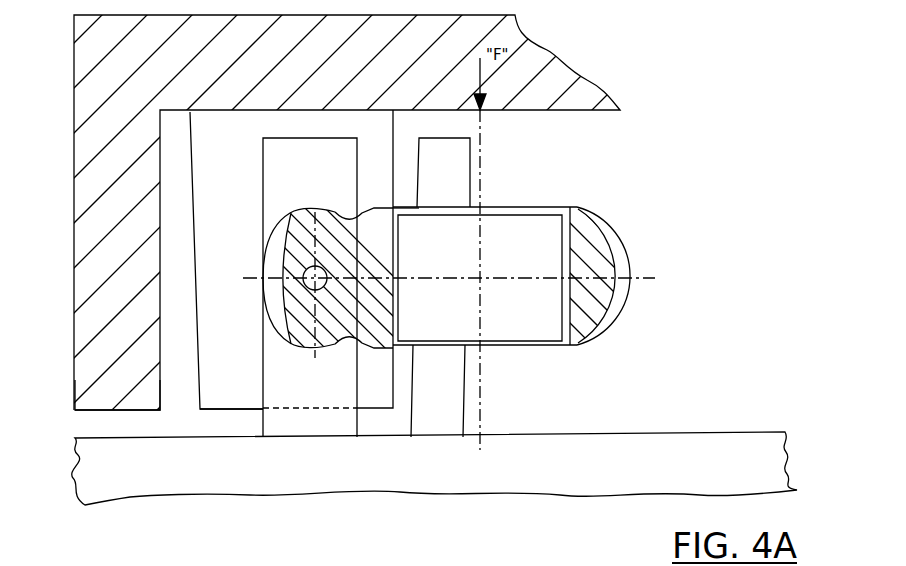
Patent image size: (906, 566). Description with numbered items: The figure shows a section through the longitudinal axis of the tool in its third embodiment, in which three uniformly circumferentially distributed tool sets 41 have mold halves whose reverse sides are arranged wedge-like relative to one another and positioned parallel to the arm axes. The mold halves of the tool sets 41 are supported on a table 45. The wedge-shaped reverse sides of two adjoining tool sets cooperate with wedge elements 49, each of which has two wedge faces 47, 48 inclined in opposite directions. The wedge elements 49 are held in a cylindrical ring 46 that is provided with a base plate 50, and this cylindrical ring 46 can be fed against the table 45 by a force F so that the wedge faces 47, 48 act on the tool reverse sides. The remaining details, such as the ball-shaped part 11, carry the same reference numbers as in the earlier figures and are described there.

The ball stud 11 is at (634, 190).
The tool set 41 is at (463, 172).
The table 45 is at (607, 433).
The cylindrical ring 46 is at (113, 393).
The wedge face 47 is at (403, 145).
The wedge face 48 is at (237, 166).
The wedge element 49 is at (232, 408).
The base plate 50 is at (575, 100).